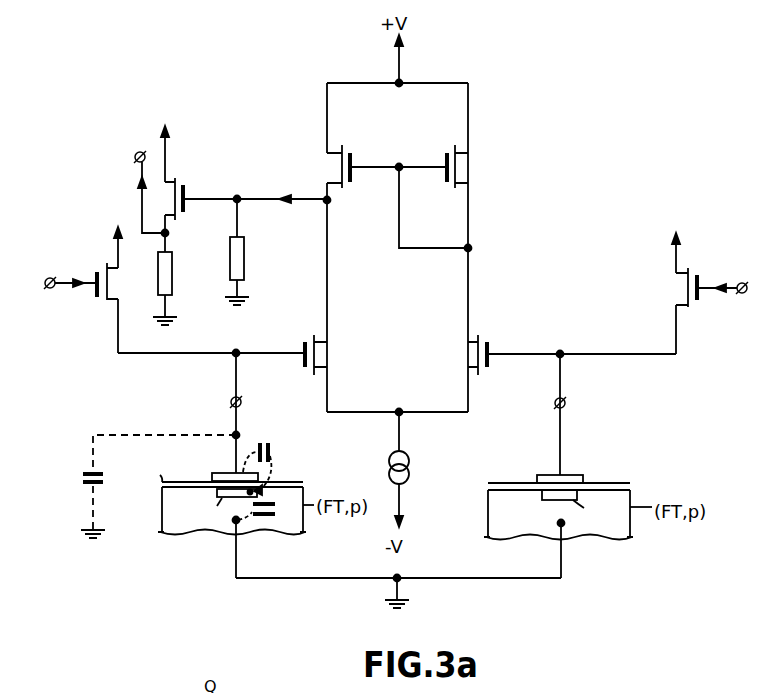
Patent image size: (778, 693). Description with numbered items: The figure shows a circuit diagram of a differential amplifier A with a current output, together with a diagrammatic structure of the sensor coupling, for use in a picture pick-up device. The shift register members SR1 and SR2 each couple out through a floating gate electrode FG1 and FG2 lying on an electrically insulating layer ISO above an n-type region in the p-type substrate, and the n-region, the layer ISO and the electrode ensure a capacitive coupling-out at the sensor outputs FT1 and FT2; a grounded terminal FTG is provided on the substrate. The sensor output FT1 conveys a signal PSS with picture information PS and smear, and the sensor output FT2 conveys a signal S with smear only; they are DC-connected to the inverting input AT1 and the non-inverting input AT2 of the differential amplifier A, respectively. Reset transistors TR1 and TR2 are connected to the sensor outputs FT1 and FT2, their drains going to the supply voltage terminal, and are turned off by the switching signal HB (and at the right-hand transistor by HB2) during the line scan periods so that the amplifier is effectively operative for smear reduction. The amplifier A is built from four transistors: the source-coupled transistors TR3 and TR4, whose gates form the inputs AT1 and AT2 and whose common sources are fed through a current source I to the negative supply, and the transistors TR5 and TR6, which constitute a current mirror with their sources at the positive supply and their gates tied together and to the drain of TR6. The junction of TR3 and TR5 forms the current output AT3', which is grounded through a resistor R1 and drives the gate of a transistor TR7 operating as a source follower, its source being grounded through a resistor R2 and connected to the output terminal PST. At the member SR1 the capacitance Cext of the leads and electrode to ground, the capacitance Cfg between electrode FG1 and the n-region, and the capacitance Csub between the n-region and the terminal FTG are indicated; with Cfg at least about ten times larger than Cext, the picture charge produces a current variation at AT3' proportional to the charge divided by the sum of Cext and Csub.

The reset transistor TR1 is at (103, 271).
The reset transistor TR2 is at (692, 277).
The source-coupled transistor TR3 is at (326, 353).
The source-coupled transistor TR4 is at (465, 353).
The current mirror transistor TR5 is at (341, 151).
The current mirror transistor TR6 is at (452, 150).
The source follower transistor TR7 is at (178, 177).
The resistor R1 is at (244, 268).
The resistor R2 is at (172, 268).
The switching signal HB is at (60, 288).
The auxiliary bias terminal (right) HB2 is at (710, 293).
The output terminal PST is at (135, 155).
The picture information PS is at (140, 197).
The signal with picture information and smear PSS is at (235, 352).
The sensor output FT1 is at (230, 402).
The sensor output FT2 is at (566, 406).
The floating gate electrode FG1 is at (222, 473).
The floating gate electrode FG2 is at (567, 475).
The electrically insulating layer ISO is at (275, 484).
The shift register member SR1 is at (192, 534).
The shift register member SR2 is at (600, 540).
The capacitance of connection leads and electrode to ground Cext is at (101, 473).
The capacitance between electrode and n-region Cfg is at (258, 452).
The capacitance between n-region and grounded substrate terminal Csub is at (280, 518).
The inverting input AT1 is at (276, 356).
The non-inverting input AT2 is at (528, 358).
The current output AT3' is at (267, 223).
The current source I is at (410, 469).
The grounded terminal FTG is at (401, 582).
The smear-only signal S is at (560, 350).
The differential amplifier A is at (399, 294).